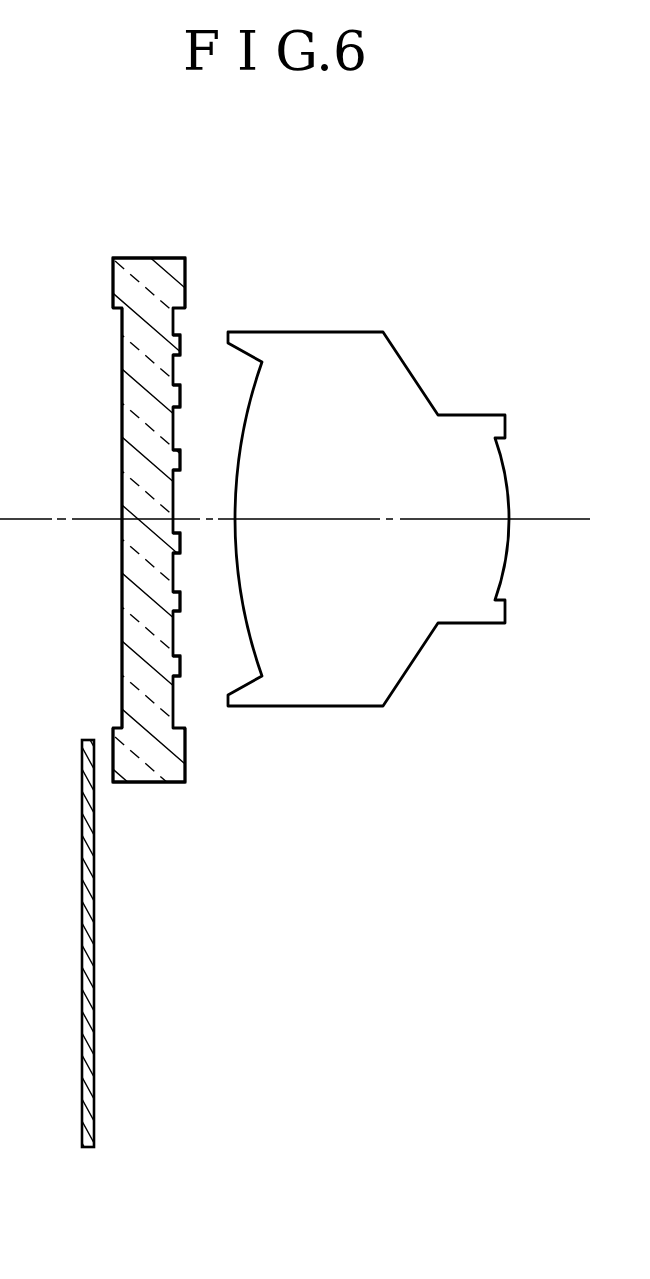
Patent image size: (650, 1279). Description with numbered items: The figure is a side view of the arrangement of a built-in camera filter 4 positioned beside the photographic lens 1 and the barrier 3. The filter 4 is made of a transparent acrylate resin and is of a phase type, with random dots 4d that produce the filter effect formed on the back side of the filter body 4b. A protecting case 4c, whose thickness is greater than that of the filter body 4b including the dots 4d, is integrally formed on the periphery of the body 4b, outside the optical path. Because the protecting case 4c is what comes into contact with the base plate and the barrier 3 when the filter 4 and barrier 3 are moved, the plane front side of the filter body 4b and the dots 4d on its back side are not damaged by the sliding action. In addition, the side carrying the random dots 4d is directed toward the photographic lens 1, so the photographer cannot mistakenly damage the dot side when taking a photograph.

The photographic lens 1 is at (341, 357).
The barrier 3 is at (94, 916).
The filter 4 is at (155, 257).
The filter body 4b is at (122, 572).
The protecting case 4c is at (113, 288).
The random dots 4d is at (181, 345).